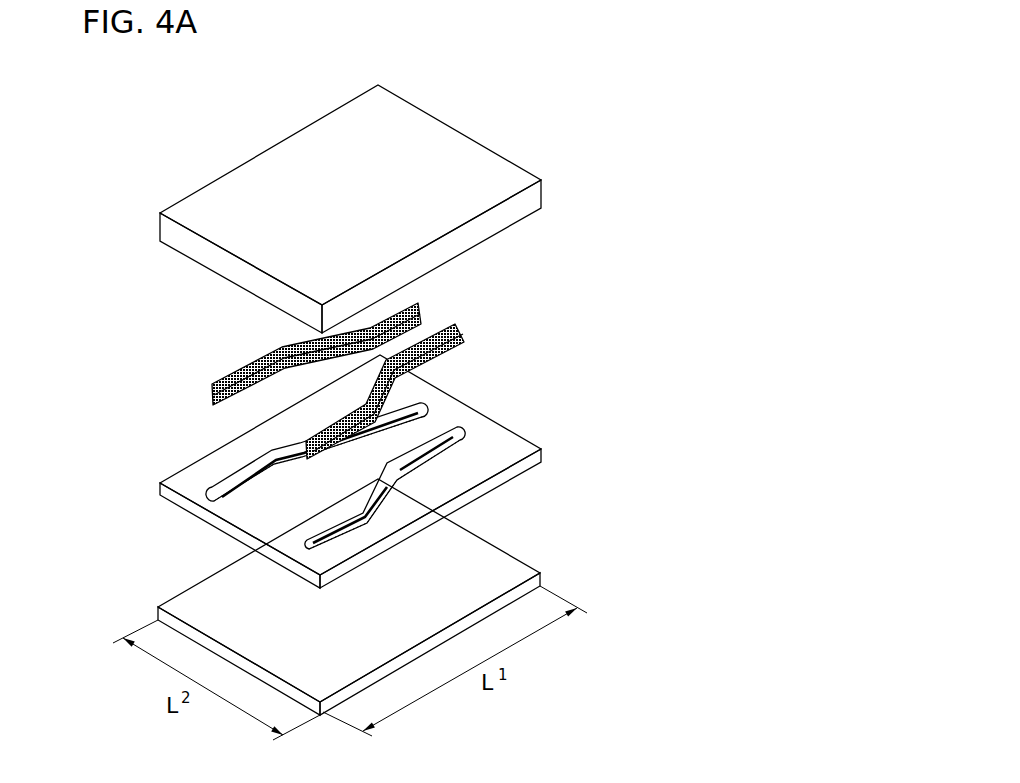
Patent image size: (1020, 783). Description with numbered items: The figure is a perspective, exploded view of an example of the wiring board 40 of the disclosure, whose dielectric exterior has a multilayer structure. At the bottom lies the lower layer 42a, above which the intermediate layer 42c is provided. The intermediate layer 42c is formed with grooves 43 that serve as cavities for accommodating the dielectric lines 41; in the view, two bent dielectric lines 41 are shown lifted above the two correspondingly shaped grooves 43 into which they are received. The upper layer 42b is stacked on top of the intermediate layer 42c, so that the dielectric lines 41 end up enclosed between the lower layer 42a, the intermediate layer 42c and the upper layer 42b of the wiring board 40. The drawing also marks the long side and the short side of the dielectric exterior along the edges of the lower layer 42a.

The wiring board 40 is at (188, 138).
The dielectric line 41 is at (462, 328).
The lower layer 42a is at (490, 567).
The upper layer 42b is at (490, 167).
The intermediate layer 42c is at (490, 459).
The groove 43 is at (458, 428).